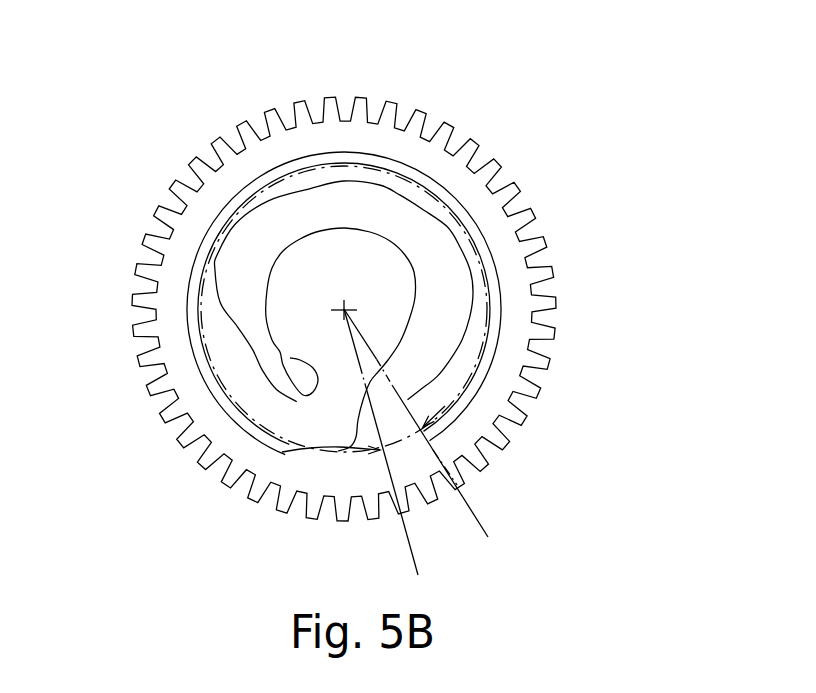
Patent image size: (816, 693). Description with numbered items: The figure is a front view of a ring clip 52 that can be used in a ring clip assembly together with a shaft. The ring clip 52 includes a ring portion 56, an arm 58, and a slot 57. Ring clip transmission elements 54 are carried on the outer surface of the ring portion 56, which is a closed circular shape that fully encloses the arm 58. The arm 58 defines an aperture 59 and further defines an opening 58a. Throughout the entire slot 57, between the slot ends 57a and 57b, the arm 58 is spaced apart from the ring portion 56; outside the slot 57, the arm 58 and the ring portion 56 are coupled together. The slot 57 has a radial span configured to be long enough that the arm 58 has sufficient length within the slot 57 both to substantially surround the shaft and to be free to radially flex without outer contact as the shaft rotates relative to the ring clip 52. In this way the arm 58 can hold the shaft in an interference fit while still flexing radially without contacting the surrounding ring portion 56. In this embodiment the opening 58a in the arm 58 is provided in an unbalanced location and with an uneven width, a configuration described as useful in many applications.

The ring clip 52 is at (157, 146).
The ring clip transmission elements 54 is at (421, 106).
The ring portion 56 is at (270, 152).
The slot 57 is at (413, 188).
The slot end 57a is at (408, 546).
The slot end 57b is at (475, 510).
The arm 58 is at (447, 264).
The opening 58a is at (341, 382).
The aperture 59 is at (385, 301).